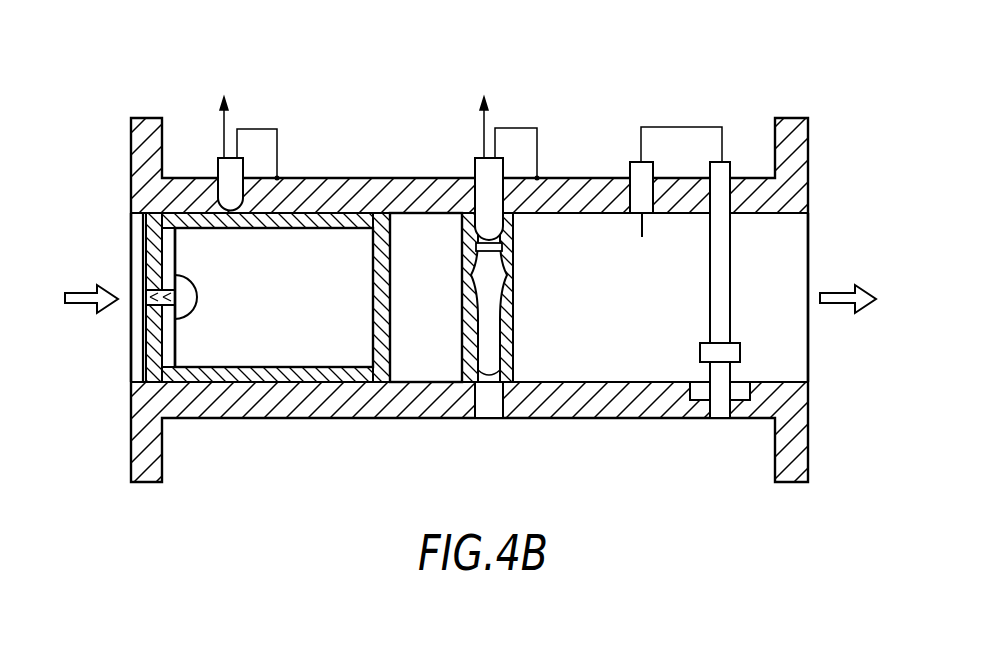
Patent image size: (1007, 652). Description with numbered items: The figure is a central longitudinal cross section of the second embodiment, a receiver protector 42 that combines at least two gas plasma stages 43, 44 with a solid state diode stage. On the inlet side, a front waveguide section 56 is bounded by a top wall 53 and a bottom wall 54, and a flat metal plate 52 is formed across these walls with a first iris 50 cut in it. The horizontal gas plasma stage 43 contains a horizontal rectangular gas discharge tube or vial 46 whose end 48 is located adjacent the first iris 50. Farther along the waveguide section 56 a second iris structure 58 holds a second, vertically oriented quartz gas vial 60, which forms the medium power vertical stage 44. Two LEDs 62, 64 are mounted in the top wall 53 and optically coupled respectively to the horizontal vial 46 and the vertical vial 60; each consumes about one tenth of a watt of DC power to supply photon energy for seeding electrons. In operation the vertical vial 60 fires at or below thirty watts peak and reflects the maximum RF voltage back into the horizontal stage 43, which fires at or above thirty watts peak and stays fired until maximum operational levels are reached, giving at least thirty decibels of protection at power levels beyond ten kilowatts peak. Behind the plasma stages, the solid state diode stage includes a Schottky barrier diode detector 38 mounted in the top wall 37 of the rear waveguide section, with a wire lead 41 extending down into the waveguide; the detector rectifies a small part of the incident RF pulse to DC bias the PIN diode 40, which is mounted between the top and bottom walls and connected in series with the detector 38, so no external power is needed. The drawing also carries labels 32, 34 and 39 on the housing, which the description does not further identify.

The receiver protector 42 is at (475, 250).
The inlet end wall 32 is at (132, 232).
The outlet end wall 34 is at (808, 258).
The top wall 37 is at (790, 215).
The Schottky barrier diode detector 38 is at (634, 172).
The bottom housing wall 39 is at (780, 382).
The PIN diode 40 is at (701, 350).
The wire lead 41 is at (642, 236).
The gas plasma stage 43 is at (306, 305).
The gas plasma stage 44 is at (444, 305).
The horizontal rectangular gas discharge vial 46 is at (238, 377).
The end 48 is at (168, 355).
The first iris 50 is at (165, 302).
The flat metal plate 52 is at (155, 262).
The top wall 53 is at (338, 188).
The bottom wall 54 is at (322, 402).
The front waveguide section 56 is at (370, 402).
The second iris structure 58 is at (513, 294).
The vertical quartz gas vial 60 is at (506, 349).
The LED 62 is at (217, 162).
The LED 64 is at (474, 174).